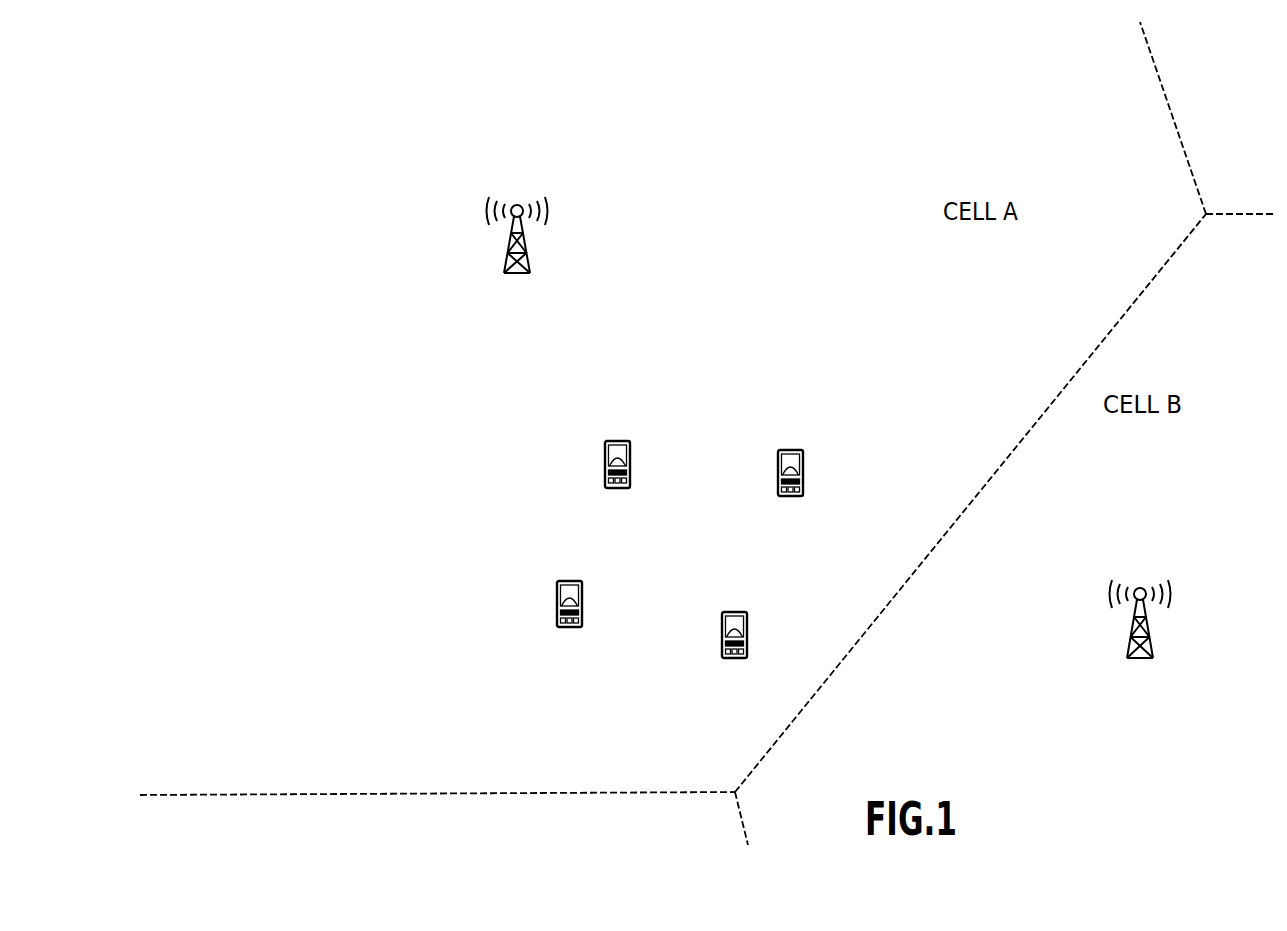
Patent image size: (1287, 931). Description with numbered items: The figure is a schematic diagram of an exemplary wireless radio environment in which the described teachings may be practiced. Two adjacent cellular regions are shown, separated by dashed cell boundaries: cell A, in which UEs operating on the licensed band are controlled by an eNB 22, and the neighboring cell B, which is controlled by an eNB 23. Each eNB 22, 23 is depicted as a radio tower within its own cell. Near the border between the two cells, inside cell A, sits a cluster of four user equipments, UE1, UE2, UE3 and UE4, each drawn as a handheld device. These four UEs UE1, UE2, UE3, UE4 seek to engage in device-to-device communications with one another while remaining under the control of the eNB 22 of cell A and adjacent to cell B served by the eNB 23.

The eNB 22 is at (511, 263).
The eNB 23 is at (1135, 646).
The UE UE1 is at (617, 479).
The UE UE2 is at (570, 617).
The UE UE3 is at (734, 647).
The UE UE4 is at (793, 485).